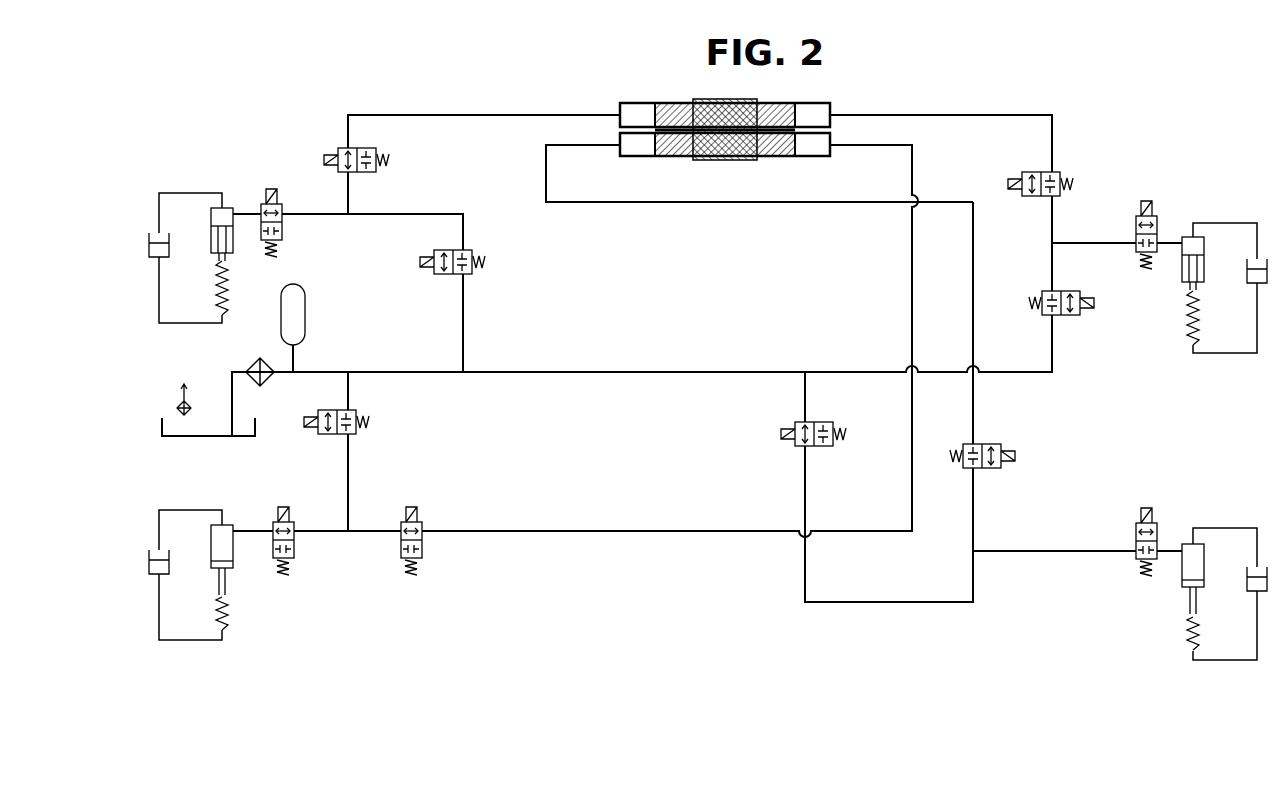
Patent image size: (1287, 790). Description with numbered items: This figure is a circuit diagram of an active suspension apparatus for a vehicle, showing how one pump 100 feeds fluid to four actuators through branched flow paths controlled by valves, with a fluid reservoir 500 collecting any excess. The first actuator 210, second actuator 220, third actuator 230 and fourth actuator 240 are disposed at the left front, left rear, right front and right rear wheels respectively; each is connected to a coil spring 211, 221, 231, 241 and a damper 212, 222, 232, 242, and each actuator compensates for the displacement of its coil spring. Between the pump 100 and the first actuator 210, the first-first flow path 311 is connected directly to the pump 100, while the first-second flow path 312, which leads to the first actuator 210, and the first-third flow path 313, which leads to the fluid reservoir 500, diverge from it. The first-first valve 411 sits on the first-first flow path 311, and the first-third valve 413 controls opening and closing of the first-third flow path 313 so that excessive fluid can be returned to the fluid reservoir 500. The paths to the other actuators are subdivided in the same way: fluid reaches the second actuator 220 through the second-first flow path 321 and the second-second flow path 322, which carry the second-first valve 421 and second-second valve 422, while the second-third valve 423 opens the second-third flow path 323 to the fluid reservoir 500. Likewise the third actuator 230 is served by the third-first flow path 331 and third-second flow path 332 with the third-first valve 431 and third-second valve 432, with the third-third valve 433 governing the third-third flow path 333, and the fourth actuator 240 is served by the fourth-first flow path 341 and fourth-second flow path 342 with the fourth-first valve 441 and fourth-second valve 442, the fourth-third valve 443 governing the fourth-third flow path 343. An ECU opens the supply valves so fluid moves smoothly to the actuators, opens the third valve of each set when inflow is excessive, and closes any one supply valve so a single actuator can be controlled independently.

The pump 100 is at (641, 102).
The first actuator 210 is at (228, 207).
The coil spring 211 is at (215, 295).
The damper 212 is at (150, 250).
The second actuator 220 is at (228, 524).
The coil spring 221 is at (213, 612).
The damper 222 is at (150, 562).
The third actuator 230 is at (1197, 236).
The coil spring 231 is at (1200, 350).
The damper 232 is at (1243, 268).
The fourth actuator 240 is at (1197, 543).
The coil spring 241 is at (1200, 650).
The damper 242 is at (1243, 576).
The part 1-1 flow path 311 is at (457, 115).
The part 1-2 flow path 312 is at (306, 213).
The part 1-3 flow path 313 is at (448, 213).
The part 2-1 flow path 321 is at (512, 532).
The part 2-2 flow path 322 is at (320, 532).
The part 2-3 flow path 323 is at (350, 470).
The part 3-1 flow path 331 is at (935, 115).
The part 3-2 flow path 332 is at (1090, 243).
The part 3-3 flow path 333 is at (1053, 350).
The part 4-1 flow path 341 is at (688, 203).
The part 4-2 flow path 342 is at (1040, 552).
The part 4-3 flow path 343 is at (886, 603).
The part 1-1 valve 411 is at (368, 147).
The part 1-3 valve 413 is at (474, 272).
The part 2-1 valve 421 is at (404, 561).
The part 2-2 valve 422 is at (279, 561).
The part 2-3 valve 423 is at (360, 413).
The part 3-1 valve 431 is at (1060, 176).
The part 3-2 valve 432 is at (1152, 201).
The part 3-3 valve 433 is at (1095, 303).
The part 4-1 valve 441 is at (1005, 455).
The part 4-2 valve 442 is at (1146, 507).
The part 4-3 valve 443 is at (795, 437).
The fluid reservoir 500 is at (180, 402).